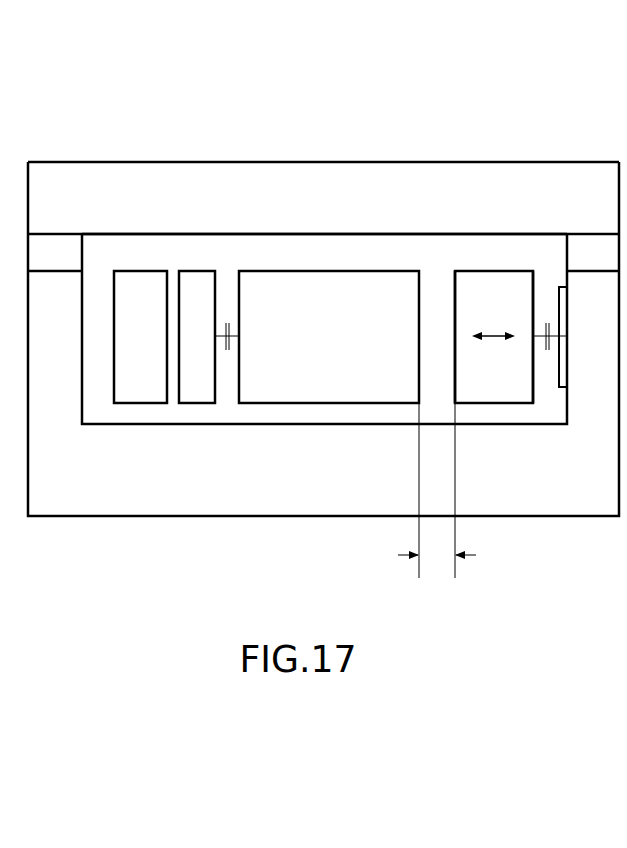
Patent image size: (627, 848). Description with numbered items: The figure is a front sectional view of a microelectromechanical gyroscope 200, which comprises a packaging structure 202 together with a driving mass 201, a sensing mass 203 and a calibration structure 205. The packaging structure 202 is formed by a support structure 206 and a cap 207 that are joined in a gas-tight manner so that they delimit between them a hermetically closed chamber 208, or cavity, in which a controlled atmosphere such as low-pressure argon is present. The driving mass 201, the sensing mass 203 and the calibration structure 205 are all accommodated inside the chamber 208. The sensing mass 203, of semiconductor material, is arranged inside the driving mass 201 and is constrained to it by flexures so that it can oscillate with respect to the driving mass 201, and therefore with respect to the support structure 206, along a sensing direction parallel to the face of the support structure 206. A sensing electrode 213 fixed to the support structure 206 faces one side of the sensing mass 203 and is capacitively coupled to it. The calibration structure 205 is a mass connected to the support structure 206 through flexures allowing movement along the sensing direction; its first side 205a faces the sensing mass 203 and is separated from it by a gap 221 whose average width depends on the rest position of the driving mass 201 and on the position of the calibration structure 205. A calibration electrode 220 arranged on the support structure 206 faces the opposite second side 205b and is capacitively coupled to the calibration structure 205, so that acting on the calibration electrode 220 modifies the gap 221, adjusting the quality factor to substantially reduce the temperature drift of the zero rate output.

The microelectromechanical gyroscope 200 is at (322, 92).
The packaging structure 202 is at (170, 140).
The cap 207 is at (369, 178).
The support structure 206 is at (90, 492).
The chamber 208 is at (226, 243).
The driving mass 201 is at (135, 390).
The sensing electrode 213 is at (200, 390).
The sensing mass 203 is at (330, 388).
The gap 221 is at (428, 289).
The calibration structure 205 is at (495, 385).
The first side 205a is at (444, 281).
The second side 205b is at (545, 385).
The calibration electrode 220 is at (560, 292).